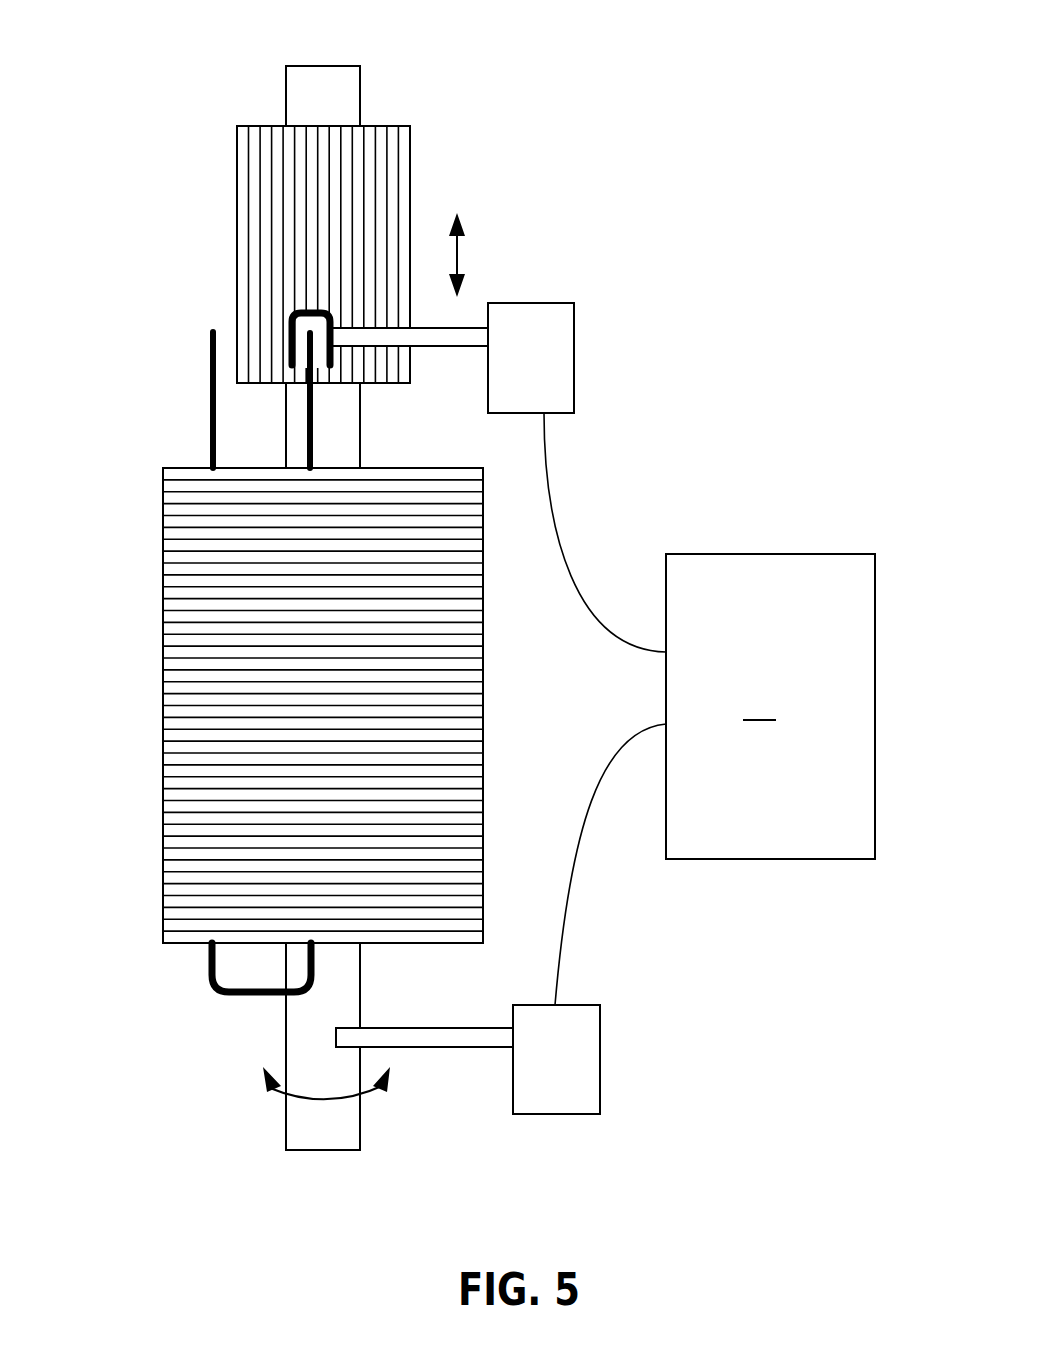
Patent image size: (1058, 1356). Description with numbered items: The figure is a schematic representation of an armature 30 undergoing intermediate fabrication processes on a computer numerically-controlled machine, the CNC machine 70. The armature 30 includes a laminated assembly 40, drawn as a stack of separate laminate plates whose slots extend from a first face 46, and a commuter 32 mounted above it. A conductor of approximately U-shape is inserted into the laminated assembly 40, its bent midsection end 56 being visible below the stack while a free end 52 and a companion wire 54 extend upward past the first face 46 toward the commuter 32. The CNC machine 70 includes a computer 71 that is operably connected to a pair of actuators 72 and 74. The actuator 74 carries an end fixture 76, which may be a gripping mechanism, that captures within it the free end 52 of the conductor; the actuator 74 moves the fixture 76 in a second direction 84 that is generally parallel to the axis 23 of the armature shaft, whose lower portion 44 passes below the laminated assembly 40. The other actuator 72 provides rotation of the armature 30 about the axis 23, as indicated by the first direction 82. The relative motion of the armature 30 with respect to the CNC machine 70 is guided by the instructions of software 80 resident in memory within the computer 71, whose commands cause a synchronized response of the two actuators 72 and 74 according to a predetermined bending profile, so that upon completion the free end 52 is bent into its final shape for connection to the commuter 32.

The CNC machine 70 is at (692, 71).
The armature 30 is at (360, 97).
The commuter 32 is at (402, 182).
The fixture 76 is at (297, 312).
The second direction 84 is at (458, 257).
The actuator 74 is at (545, 350).
The first wire 54 is at (213, 333).
The free end 52 is at (307, 368).
The first face 46 is at (379, 467).
The computer 71 is at (770, 670).
The software 80 is at (767, 561).
The laminated assembly 40 is at (207, 880).
The lower shaft 44 is at (380, 946).
The midsection end 56 is at (250, 995).
The actuator 72 is at (583, 1067).
The first direction 82 is at (370, 1097).
The axis 23 is at (315, 1133).